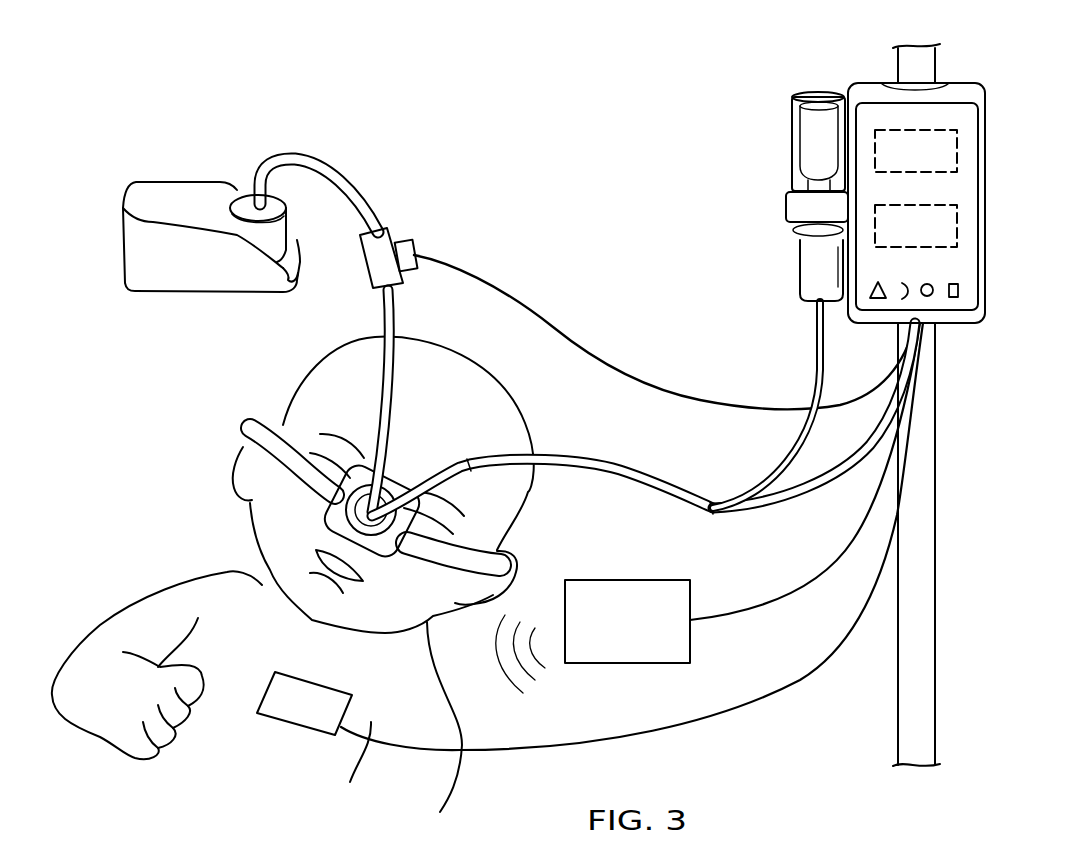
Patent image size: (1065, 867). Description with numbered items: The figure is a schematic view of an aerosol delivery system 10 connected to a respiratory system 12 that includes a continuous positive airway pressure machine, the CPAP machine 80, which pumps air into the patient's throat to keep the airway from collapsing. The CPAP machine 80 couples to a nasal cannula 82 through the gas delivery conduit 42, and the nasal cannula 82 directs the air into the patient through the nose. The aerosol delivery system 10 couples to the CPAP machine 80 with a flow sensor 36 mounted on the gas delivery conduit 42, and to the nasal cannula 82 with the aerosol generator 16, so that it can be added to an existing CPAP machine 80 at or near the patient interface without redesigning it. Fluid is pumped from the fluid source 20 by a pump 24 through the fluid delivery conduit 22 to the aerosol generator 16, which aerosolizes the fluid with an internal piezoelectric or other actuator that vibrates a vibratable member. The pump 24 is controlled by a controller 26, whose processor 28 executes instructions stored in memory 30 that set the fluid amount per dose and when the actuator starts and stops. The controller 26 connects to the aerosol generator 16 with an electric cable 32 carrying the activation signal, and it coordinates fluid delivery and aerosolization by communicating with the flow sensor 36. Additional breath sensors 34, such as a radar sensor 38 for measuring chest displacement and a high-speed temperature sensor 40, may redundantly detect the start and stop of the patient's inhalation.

The aerosol delivery system 10 is at (622, 100).
The respiratory system 12 is at (327, 100).
The aerosol generator 16 is at (342, 522).
The fluid source 20 is at (791, 146).
The fluid delivery conduit 22 is at (814, 364).
The pump 24 is at (816, 273).
The controller 26 is at (955, 203).
The processor 28 is at (957, 150).
The memory 30 is at (957, 233).
The cable 32 is at (803, 513).
The breath sensor 34 is at (768, 757).
The flow sensor 36 is at (403, 232).
The radar sensor 38 is at (622, 580).
The high-speed temperature sensor 40 is at (296, 724).
The gas delivery conduit 42 is at (393, 318).
The CPAP machine 80 is at (183, 180).
The nasal cannula 82 is at (242, 430).